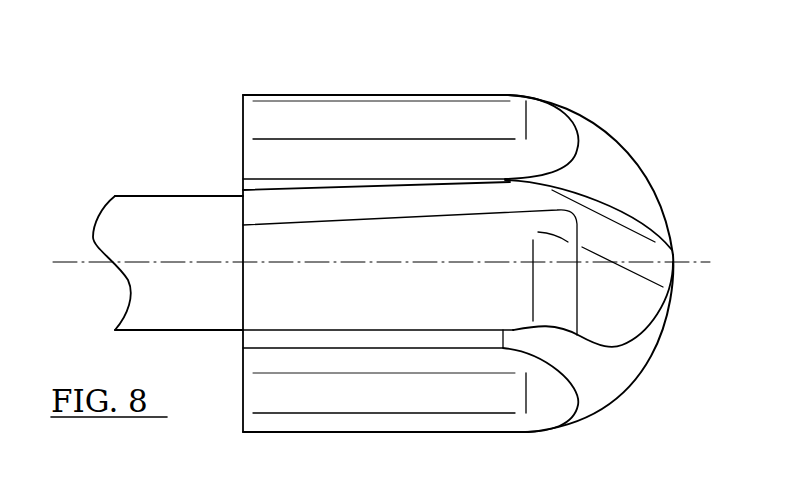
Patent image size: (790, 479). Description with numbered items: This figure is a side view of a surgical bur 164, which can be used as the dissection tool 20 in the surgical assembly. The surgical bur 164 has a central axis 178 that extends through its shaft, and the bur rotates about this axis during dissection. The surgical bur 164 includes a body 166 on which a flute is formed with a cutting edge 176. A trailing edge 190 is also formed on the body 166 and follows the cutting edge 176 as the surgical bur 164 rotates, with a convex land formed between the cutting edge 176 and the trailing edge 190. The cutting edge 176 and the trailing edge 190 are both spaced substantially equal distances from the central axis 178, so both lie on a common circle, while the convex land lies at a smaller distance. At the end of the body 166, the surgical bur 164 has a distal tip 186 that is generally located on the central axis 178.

The dissection tool 20 is at (226, 66).
The surgical bur 164 is at (600, 80).
The body 166 is at (636, 147).
The cutting edge 176 is at (386, 93).
The central axis 178 is at (87, 262).
The distal tip 186 is at (674, 253).
The trailing edge 190 is at (240, 182).